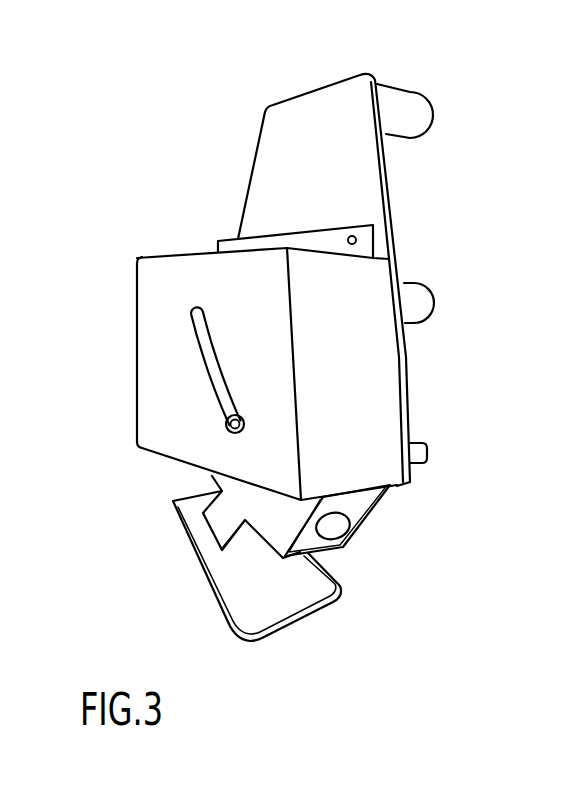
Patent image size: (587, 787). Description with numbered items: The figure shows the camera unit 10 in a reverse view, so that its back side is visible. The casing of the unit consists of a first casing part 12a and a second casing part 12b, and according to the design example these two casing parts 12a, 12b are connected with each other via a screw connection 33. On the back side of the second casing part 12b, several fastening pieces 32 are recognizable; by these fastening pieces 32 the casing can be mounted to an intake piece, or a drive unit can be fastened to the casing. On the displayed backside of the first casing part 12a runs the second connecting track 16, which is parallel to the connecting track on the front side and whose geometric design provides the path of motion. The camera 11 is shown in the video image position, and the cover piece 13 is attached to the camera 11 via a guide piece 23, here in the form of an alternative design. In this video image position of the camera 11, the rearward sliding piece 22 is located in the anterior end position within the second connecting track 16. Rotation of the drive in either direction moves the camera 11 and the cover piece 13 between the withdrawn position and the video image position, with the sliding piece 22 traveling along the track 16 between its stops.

The camera unit 10 is at (88, 249).
The camera 11 is at (340, 526).
The first casing part 12a is at (355, 415).
The second casing part 12b is at (313, 128).
The cover piece 13 is at (308, 589).
The second connecting track 16 is at (208, 367).
The rearward sliding piece 22 is at (226, 426).
The guide piece 23 is at (225, 519).
The fastening pieces 32 is at (418, 119).
The screw connection 33 is at (356, 236).